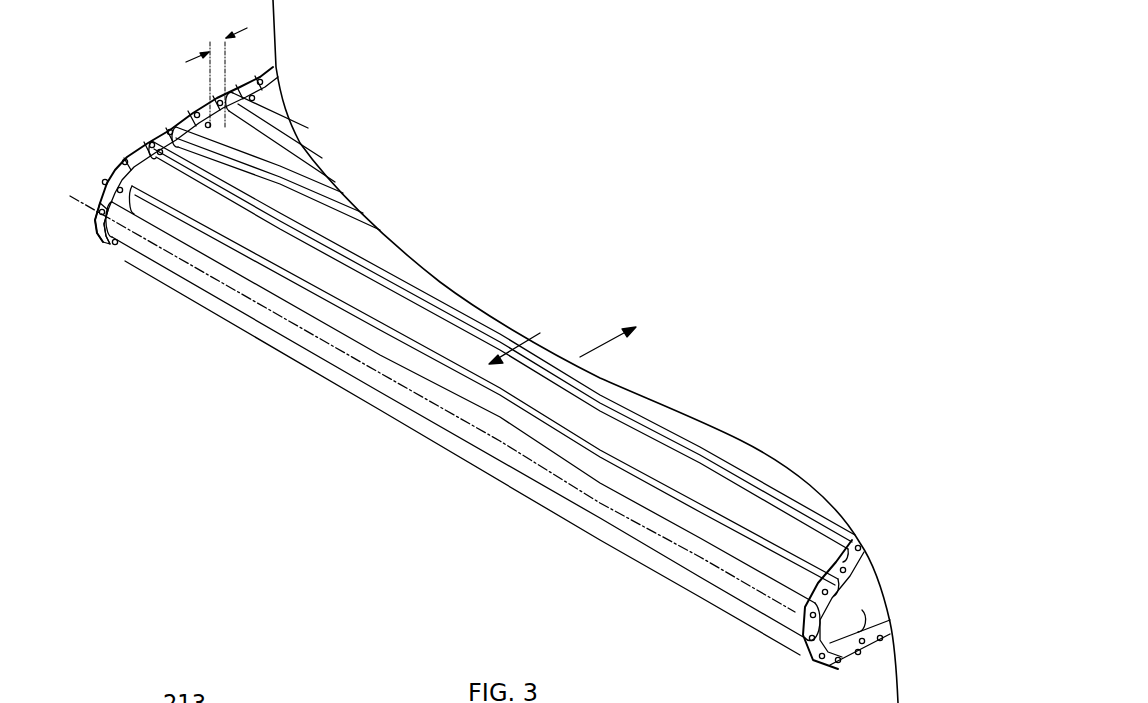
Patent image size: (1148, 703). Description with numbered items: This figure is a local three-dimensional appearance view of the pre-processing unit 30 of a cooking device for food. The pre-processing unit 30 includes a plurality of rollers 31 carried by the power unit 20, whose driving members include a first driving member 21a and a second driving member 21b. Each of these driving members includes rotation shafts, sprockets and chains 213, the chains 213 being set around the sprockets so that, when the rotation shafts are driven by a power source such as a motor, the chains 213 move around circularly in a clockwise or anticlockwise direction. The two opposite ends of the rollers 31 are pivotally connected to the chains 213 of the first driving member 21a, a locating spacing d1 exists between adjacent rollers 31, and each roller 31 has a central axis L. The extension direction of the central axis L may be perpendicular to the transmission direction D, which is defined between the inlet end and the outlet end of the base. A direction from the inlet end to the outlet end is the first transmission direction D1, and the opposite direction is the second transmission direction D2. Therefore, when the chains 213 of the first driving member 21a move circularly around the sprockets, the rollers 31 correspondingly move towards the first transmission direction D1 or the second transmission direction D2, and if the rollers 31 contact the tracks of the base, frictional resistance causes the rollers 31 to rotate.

The power unit 20 is at (173, 108).
The first driving member 21a is at (186, 156).
The second driving member 21b is at (860, 642).
The chain 213 is at (93, 227).
The pre-processing unit 30 is at (260, 358).
The roller 31 is at (192, 268).
The central axis L is at (525, 458).
The transmission direction D is at (615, 272).
The first transmission direction D1 is at (528, 345).
The second transmission direction D2 is at (604, 350).
The locating spacing d1 is at (216, 66).